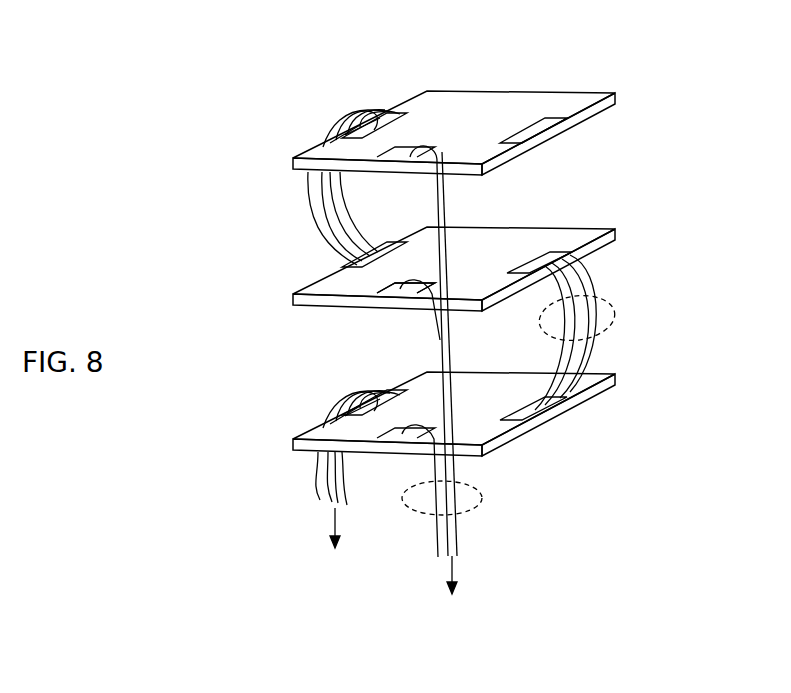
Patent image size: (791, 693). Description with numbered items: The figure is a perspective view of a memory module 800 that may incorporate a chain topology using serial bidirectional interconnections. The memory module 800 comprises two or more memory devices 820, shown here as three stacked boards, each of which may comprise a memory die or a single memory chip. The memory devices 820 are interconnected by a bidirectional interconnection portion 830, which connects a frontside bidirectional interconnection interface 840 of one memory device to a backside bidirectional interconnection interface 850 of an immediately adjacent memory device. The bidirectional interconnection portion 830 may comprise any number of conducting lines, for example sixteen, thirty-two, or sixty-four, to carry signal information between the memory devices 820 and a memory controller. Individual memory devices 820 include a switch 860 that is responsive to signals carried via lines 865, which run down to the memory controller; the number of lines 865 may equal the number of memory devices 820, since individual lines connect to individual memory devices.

The memory module 800 is at (252, 140).
The memory devices 820 is at (547, 92).
The bidirectional interconnection portion 830 is at (615, 305).
The frontside bidirectional interconnection interface 840 is at (400, 112).
The backside bidirectional interconnection interface 850 is at (560, 118).
The switch 860 is at (407, 292).
The lines 865 is at (482, 491).